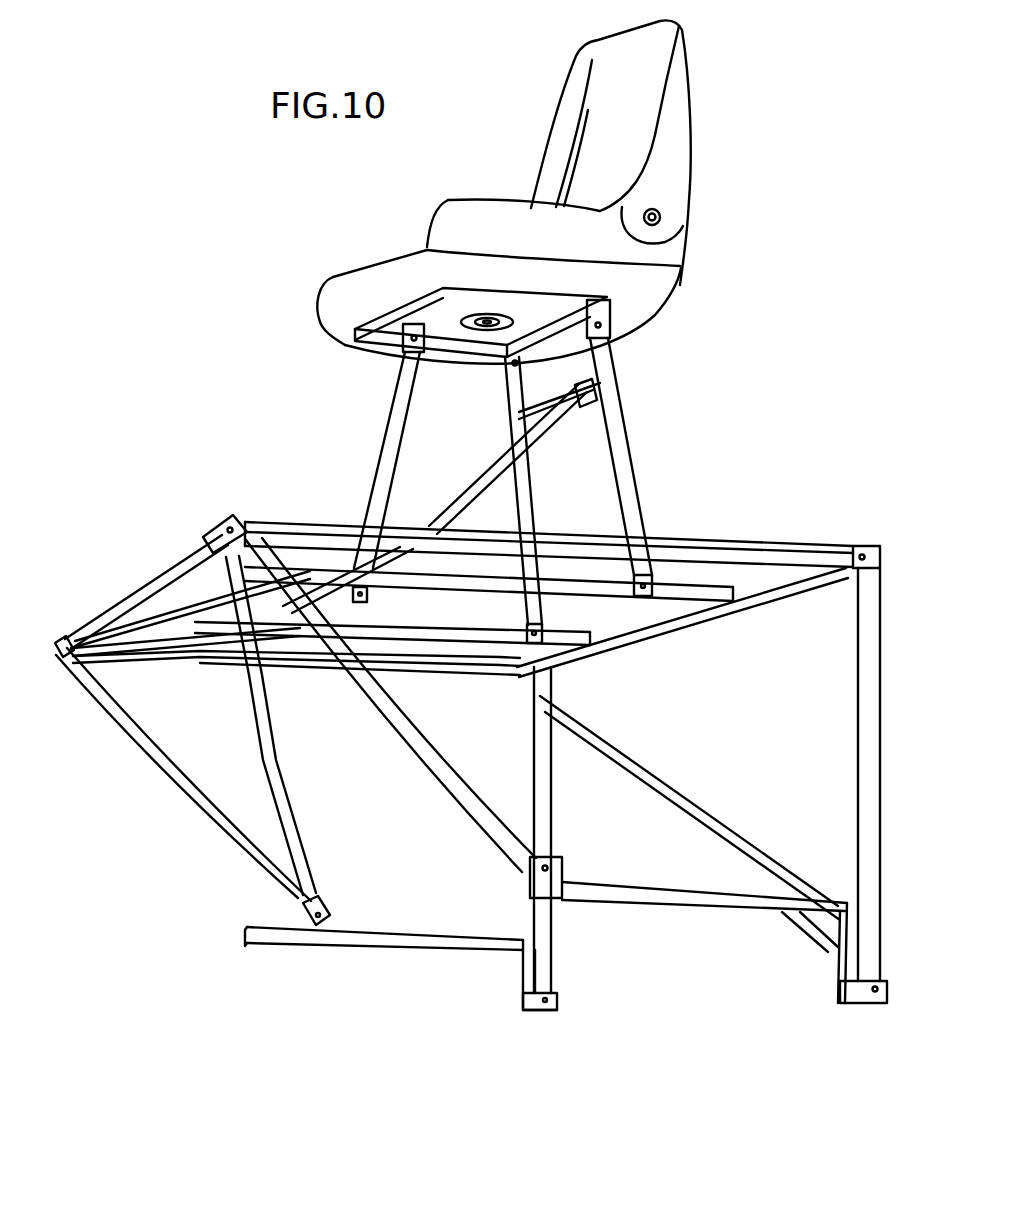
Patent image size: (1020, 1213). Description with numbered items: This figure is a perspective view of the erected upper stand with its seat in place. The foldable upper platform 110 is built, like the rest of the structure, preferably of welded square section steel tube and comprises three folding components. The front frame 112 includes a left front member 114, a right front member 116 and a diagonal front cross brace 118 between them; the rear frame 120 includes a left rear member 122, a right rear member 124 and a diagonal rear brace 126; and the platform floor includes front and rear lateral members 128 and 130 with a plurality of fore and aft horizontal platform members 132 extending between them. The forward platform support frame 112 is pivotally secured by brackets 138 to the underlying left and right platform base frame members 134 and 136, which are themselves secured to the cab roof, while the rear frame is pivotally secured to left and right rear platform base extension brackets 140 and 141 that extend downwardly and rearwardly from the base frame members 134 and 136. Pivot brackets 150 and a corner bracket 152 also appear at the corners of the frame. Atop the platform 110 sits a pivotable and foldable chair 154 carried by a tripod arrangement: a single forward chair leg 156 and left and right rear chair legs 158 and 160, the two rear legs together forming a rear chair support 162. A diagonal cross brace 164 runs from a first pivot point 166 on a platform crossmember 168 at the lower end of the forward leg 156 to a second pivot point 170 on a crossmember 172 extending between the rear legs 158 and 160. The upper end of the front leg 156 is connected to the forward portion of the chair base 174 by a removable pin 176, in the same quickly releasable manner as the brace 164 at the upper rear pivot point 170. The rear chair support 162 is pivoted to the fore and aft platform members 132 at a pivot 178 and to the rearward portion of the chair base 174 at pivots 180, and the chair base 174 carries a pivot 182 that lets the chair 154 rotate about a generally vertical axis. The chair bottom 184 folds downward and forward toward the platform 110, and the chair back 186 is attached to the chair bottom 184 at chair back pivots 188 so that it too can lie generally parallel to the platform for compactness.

The foldable upper platform 110 is at (289, 478).
The front frame 112 is at (223, 864).
The left front member 114 is at (432, 770).
The right front member 116 is at (189, 803).
The diagonal front cross brace 118 is at (278, 753).
The rear frame 120 is at (514, 699).
The left rear member 122 is at (860, 721).
The right rear member 124 is at (536, 740).
The diagonal rear brace 126 is at (654, 760).
The front lateral member 128 is at (158, 574).
The rear lateral member 130 is at (764, 594).
The fore and aft horizontal platform members 132 is at (480, 621).
The left platform base frame member 134 is at (677, 906).
The right platform base frame member 136 is at (400, 946).
The brackets 138 is at (562, 866).
The left rear platform base extension bracket 140 is at (878, 1006).
The right rear platform base extension bracket 141 is at (557, 1001).
The pivot bracket 150 is at (226, 512).
The corner bracket 152 is at (857, 545).
The chair 154 is at (416, 177).
The forward chair leg 156 is at (396, 418).
The left rear chair leg 158 is at (628, 441).
The right rear chair leg 160 is at (530, 500).
The rear chair support 162 is at (626, 380).
The diagonal cross brace 164 is at (482, 478).
The first pivot point 166 is at (367, 602).
The platform crossmember 168 is at (326, 582).
The second pivot point 170 is at (587, 409).
The crossmember 172 is at (522, 386).
The chair base 174 is at (540, 296).
The removable pin 176 is at (398, 352).
The pivot 178 is at (649, 574).
The pivots 180 is at (580, 337).
The pivot 182 is at (485, 335).
The chair bottom 184 is at (396, 278).
The chair back 186 is at (690, 123).
The chair back pivots 188 is at (672, 213).